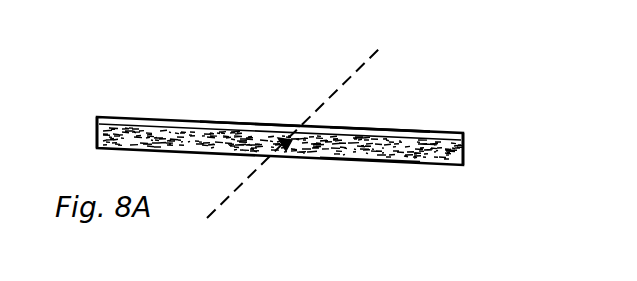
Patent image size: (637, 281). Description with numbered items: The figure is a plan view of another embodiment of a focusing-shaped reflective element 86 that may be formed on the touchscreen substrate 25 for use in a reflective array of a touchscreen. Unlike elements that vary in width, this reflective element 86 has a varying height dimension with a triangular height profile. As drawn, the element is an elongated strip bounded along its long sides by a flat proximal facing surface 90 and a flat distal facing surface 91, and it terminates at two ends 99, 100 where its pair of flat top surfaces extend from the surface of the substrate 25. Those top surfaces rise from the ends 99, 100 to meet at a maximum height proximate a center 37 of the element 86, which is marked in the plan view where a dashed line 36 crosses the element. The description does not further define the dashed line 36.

The panel member 25 is at (183, 85).
The axis line 36 is at (327, 103).
The pivot point 37 is at (295, 152).
The top surface 86 is at (250, 123).
The bottom surface 90 is at (366, 162).
The upper edge 91 is at (377, 130).
The first end 99 is at (99, 135).
The second end 100 is at (462, 147).